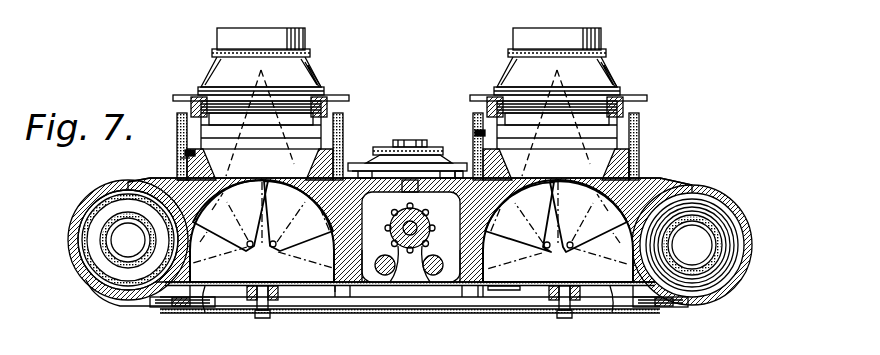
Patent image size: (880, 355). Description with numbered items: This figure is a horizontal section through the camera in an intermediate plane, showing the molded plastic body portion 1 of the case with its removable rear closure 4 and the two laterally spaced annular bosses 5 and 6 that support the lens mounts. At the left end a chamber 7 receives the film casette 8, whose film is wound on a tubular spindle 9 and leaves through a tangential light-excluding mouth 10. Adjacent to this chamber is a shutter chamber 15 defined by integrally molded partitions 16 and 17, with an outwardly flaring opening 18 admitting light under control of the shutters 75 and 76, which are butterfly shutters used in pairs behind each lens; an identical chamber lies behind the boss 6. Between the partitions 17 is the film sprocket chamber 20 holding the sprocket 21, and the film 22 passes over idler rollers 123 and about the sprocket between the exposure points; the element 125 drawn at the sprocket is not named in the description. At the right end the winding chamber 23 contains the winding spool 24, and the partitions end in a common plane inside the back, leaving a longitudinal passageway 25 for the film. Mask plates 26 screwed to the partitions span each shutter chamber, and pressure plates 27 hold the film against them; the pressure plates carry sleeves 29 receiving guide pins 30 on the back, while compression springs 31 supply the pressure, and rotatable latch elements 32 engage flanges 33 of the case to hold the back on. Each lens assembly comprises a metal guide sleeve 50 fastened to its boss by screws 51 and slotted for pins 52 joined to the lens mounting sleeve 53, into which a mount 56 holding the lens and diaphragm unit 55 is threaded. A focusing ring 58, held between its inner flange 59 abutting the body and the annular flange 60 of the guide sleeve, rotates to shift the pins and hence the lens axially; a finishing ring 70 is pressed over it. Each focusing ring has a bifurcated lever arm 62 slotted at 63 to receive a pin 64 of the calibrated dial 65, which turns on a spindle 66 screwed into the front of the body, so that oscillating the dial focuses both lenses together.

The body portion 1 is at (712, 178).
The rear closure 4 is at (505, 300).
The annular boss 5 is at (343, 160).
The annular boss 6 is at (641, 165).
The casette-receiving chamber 7 is at (75, 229).
The casette 8 is at (78, 256).
The tubular spindle 9 is at (108, 262).
The light-excluding mouth 10 is at (135, 306).
The shutter chamber 15 is at (320, 268).
The partition 16 is at (212, 288).
The partition 17 is at (352, 285).
The outwardly flaring opening 18 is at (342, 142).
The film sprocket chamber 20 is at (450, 252).
The sprocket 21 is at (396, 226).
The film 22 is at (378, 290).
The film winding chamber 23 is at (745, 228).
The winding spool 24 is at (705, 258).
The longitudinal passageway 25 is at (410, 290).
The mask plate 26 is at (486, 283).
The pressure plate 27 is at (232, 286).
The sleeve 29 is at (270, 300).
The guide pin 30 is at (255, 303).
The compression spring 31 is at (300, 282).
The latch element 32 is at (183, 312).
The flange 33 is at (160, 304).
The guide sleeve 50 is at (180, 142).
The screw 51 is at (180, 164).
The pin 52 is at (340, 122).
The lens mounting sleeve 53 is at (330, 98).
The lens and diaphragm unit 55 is at (306, 70).
The mount 56 is at (320, 100).
The focusing ring 58 is at (178, 128).
The flange 59 is at (176, 169).
The annular flange 60 is at (182, 99).
The bifurcated lever arm 62 is at (376, 165).
The slot 63 is at (418, 160).
The pin 64 is at (458, 170).
The calibrated dial 65 is at (412, 148).
The spindle 66 is at (410, 140).
The finishing ring 70 is at (178, 153).
The shutter 75 is at (410, 222).
The shutter 76 is at (410, 225).
The idler roller 123 is at (379, 259).
The gear teeth 125 is at (436, 212).